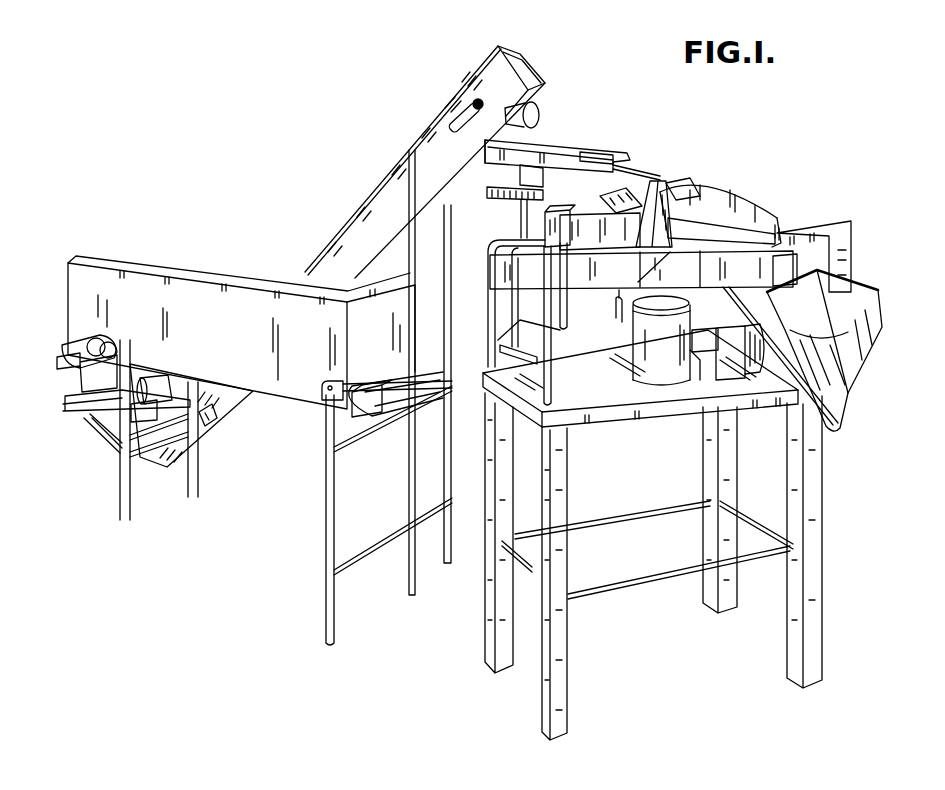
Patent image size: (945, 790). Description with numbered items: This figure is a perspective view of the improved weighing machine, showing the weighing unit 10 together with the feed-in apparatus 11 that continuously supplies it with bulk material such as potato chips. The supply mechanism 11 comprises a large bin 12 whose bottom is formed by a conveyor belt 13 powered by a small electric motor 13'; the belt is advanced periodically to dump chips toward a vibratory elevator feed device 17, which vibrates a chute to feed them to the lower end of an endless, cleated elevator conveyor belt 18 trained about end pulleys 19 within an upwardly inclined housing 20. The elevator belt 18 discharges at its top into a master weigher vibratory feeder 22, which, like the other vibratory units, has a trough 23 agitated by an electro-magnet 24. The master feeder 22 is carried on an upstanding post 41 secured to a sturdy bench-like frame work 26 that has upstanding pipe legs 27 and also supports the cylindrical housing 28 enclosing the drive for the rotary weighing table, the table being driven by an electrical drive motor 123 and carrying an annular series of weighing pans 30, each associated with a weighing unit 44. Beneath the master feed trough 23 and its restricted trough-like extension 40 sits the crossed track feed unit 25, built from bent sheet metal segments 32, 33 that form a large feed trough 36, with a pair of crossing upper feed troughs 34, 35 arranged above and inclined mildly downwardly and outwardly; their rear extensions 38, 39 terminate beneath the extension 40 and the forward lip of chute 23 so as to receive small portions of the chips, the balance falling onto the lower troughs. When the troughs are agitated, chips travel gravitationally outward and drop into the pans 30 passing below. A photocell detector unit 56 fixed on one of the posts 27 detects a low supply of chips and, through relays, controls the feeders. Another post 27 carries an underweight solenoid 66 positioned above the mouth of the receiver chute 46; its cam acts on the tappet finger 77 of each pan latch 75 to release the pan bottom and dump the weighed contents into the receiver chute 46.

The weighing unit 10 is at (843, 468).
The feed-in apparatus 11 is at (267, 491).
The bin 12 is at (228, 305).
The conveyor belt 13 is at (387, 397).
The electric motor 13' is at (64, 357).
The vibratory elevator feed device 17 is at (90, 415).
The elevator conveyor belt 18 is at (525, 113).
The end pulleys 19 is at (454, 131).
The housing 20 is at (374, 216).
The master weigher vibratory feeder 22 is at (568, 141).
The trough 23 is at (598, 150).
The electro-magnet 24 is at (507, 195).
The crossed track feed unit 25 is at (750, 177).
The frame work 26 is at (578, 484).
The pipe legs 27 is at (487, 306).
The cylindrical housing 28 is at (636, 356).
The weighing pans 30 is at (586, 270).
The sheet metal segment 32 is at (627, 233).
The sheet metal segment 33 is at (720, 184).
The crossing feed trough 34 is at (678, 187).
The crossing feed trough 35 is at (745, 214).
The feed trough 36 is at (791, 282).
The rear extension 38 is at (670, 183).
The rear extension 39 is at (609, 204).
The trough-like extension 40 is at (655, 176).
The post 41 is at (498, 338).
The weighing unit 44 is at (610, 315).
The receiver chute 46 is at (852, 328).
The photocell detector unit 56 is at (558, 210).
The underweight solenoid 66 is at (793, 231).
The latch 75 is at (736, 288).
The tappet finger 77 is at (747, 267).
The electrical drive motor 123 is at (694, 378).